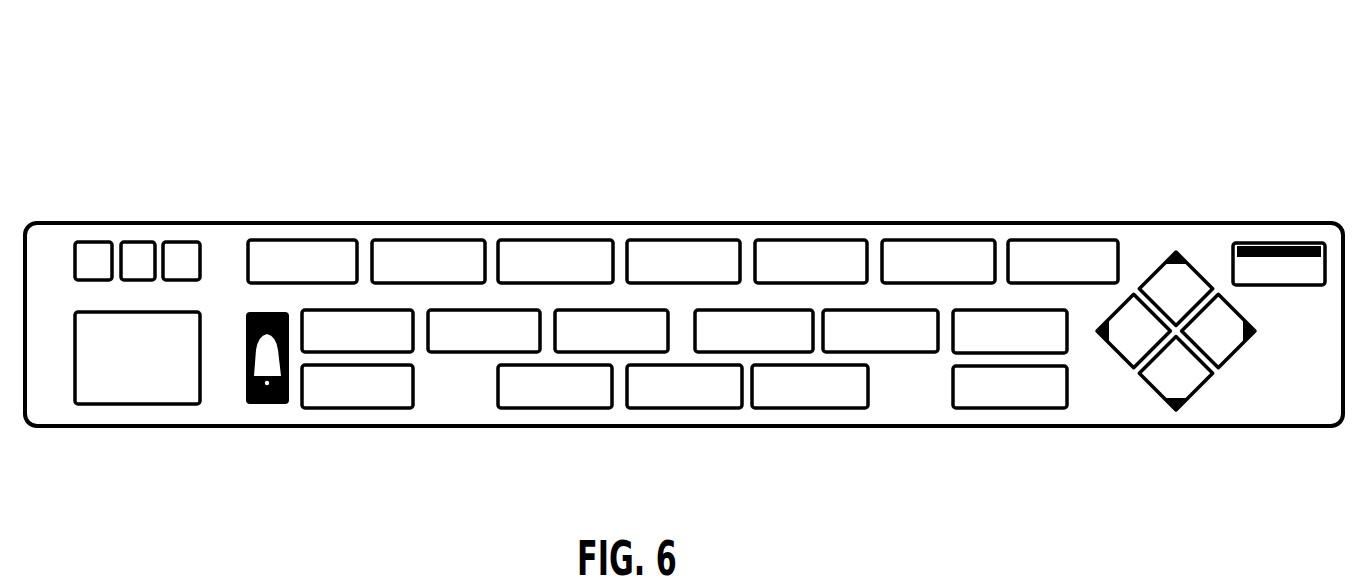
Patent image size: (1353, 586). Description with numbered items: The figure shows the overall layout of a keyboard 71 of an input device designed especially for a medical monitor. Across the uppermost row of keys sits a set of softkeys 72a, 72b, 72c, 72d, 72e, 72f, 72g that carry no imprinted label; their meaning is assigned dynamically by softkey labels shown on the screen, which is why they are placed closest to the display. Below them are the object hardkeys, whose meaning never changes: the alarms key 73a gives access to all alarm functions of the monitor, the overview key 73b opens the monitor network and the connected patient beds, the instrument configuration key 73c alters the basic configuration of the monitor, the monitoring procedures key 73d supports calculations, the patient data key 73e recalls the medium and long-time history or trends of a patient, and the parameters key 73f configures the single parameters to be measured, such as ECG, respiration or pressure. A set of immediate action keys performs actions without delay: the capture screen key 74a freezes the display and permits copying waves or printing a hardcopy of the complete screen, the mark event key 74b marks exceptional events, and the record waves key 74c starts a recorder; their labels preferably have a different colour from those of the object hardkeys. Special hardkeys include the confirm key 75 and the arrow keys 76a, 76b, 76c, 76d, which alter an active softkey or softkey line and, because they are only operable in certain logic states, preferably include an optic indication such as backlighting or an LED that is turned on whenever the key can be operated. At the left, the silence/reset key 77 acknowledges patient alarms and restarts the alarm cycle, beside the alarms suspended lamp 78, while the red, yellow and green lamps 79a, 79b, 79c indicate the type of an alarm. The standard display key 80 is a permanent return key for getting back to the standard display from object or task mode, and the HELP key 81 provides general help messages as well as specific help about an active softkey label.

The keyboard 71 is at (590, 122).
The softkey 72a is at (300, 254).
The softkey 72b is at (405, 253).
The softkey 72c is at (518, 253).
The softkey 72d is at (657, 253).
The softkey 72e is at (782, 254).
The softkey 72f is at (910, 254).
The softkey 72g is at (1032, 254).
The alarms key 73a is at (407, 346).
The overview key 73b is at (470, 346).
The instrument configuration key 73c is at (622, 347).
The monitoring procedures key 73d is at (752, 349).
The patient data key 73e is at (922, 343).
The parameters key 73f is at (1065, 349).
The capture screen key 74a is at (507, 405).
The mark event key 74b is at (720, 401).
The record waves key 74c is at (848, 398).
The confirm key 75 is at (1325, 266).
The arrow key 76a is at (1188, 285).
The arrow key 76b is at (1128, 308).
The arrow key 76c is at (1196, 378).
The arrow key 76d is at (1228, 352).
The silence/reset key 77 is at (118, 394).
The alarms suspended lamp 78 is at (270, 404).
The red lamp 79a is at (98, 246).
The yellow lamp 79b is at (147, 247).
The green lamp 79c is at (191, 248).
The standard display key 80 is at (313, 405).
The HELP key 81 is at (970, 397).